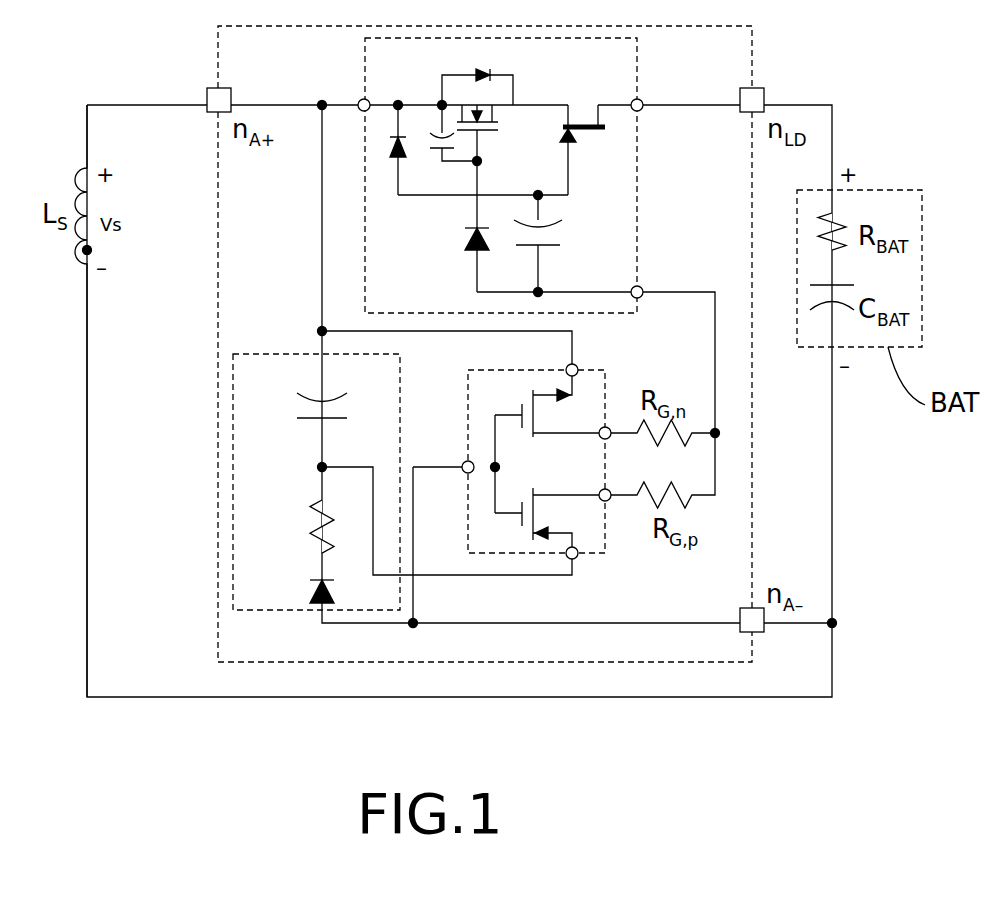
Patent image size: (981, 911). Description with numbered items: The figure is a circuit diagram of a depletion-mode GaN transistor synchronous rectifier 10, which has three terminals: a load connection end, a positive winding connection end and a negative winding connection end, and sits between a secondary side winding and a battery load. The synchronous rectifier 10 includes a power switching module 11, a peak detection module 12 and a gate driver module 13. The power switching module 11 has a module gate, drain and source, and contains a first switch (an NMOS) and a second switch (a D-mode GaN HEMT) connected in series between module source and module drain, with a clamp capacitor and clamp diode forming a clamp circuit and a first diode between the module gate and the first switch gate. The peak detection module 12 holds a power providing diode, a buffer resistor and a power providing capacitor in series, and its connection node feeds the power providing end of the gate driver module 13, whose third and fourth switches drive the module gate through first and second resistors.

The synchronous rectifier 10 is at (752, 56).
The power switching module 11 is at (637, 198).
The peak detection module 12 is at (233, 433).
The gate driver module 13 is at (510, 370).